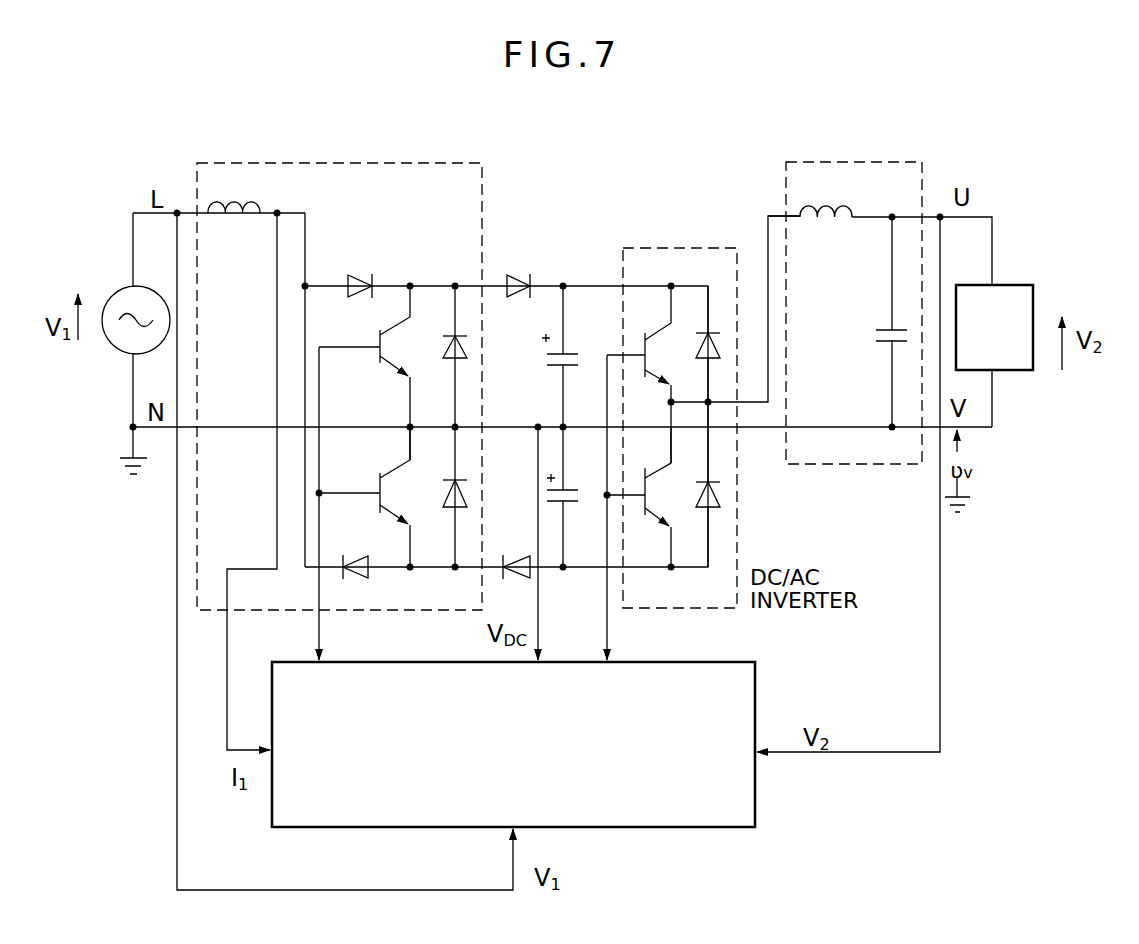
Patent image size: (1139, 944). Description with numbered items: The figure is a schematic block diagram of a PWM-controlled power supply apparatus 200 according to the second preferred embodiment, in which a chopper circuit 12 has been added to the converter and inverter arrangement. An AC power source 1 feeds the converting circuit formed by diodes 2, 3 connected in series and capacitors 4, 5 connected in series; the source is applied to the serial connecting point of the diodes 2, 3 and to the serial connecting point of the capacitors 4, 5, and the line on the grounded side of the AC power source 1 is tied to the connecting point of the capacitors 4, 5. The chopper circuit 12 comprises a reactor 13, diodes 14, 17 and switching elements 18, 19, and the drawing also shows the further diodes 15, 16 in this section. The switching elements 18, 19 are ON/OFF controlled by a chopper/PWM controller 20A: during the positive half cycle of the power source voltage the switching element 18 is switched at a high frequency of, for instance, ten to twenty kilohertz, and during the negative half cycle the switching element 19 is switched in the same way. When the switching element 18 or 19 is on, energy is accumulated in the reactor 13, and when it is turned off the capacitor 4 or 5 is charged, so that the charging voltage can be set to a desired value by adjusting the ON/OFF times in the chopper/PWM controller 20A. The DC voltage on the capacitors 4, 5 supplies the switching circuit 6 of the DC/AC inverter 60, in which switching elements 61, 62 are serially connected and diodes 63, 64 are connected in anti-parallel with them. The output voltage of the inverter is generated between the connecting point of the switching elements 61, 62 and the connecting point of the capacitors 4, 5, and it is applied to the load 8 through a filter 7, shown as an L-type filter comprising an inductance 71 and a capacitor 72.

The AC power source 1 is at (106, 294).
The diode 2 is at (522, 276).
The diode 3 is at (519, 552).
The capacitor 4 is at (582, 356).
The capacitor 5 is at (576, 491).
The switching circuit 6 is at (674, 248).
The filter 7 is at (866, 162).
The load 8 is at (996, 286).
The chopper circuit 12 is at (393, 127).
The reactor 13 is at (238, 222).
The diode 14 is at (369, 270).
The diode 15 is at (358, 556).
The diode 16 is at (470, 350).
The diode 17 is at (469, 482).
The switching element 18 is at (374, 356).
The switching element 19 is at (378, 490).
The chopper/PWM controller 20A is at (638, 663).
The DC/AC inverter 60 is at (752, 645).
The switching element 61 is at (642, 367).
The switching element 62 is at (642, 502).
The diode 63 is at (714, 330).
The diode 64 is at (717, 477).
The inductance 71 is at (822, 226).
The capacitor 72 is at (874, 335).
The power supply apparatus 200 is at (715, 157).